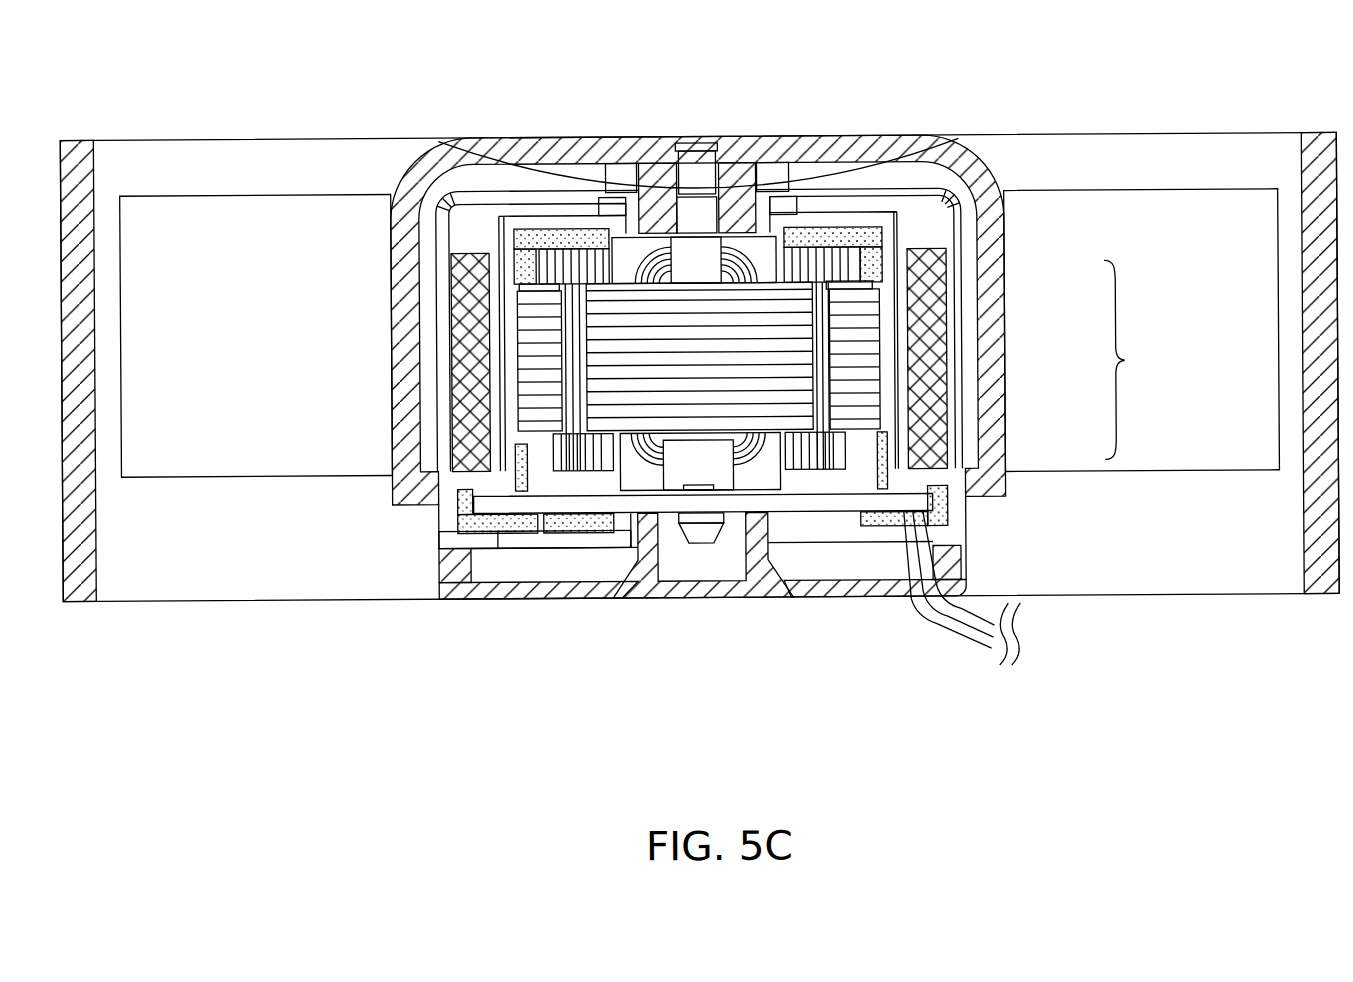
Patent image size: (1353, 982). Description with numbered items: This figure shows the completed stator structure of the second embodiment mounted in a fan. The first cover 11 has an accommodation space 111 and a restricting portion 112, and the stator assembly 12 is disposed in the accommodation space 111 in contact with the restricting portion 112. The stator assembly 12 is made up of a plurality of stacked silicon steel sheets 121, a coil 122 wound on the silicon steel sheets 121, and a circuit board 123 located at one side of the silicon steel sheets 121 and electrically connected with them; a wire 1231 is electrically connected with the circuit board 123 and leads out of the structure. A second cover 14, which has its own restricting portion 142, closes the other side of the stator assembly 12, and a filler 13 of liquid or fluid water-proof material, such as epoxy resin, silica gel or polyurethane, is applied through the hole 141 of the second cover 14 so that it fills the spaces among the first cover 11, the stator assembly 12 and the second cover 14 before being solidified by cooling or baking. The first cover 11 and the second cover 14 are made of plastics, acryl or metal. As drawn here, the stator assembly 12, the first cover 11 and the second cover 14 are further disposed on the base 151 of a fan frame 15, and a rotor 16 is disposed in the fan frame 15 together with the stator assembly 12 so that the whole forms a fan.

The first cover 11 is at (512, 385).
The accommodation space 111 is at (523, 243).
The restricting portion 112 is at (623, 228).
The stator assembly 12 is at (1130, 359).
The silicon steel sheets 121 is at (865, 347).
The coil 122 is at (853, 267).
The circuit board 123 is at (927, 497).
The wire 1231 is at (987, 617).
The filler 13 is at (818, 233).
The second cover 14 is at (443, 540).
The hole 141 is at (497, 532).
The restricting portion 142 is at (620, 522).
The fan frame 15 is at (75, 155).
The base 151 is at (618, 588).
The rotor 16 is at (755, 186).